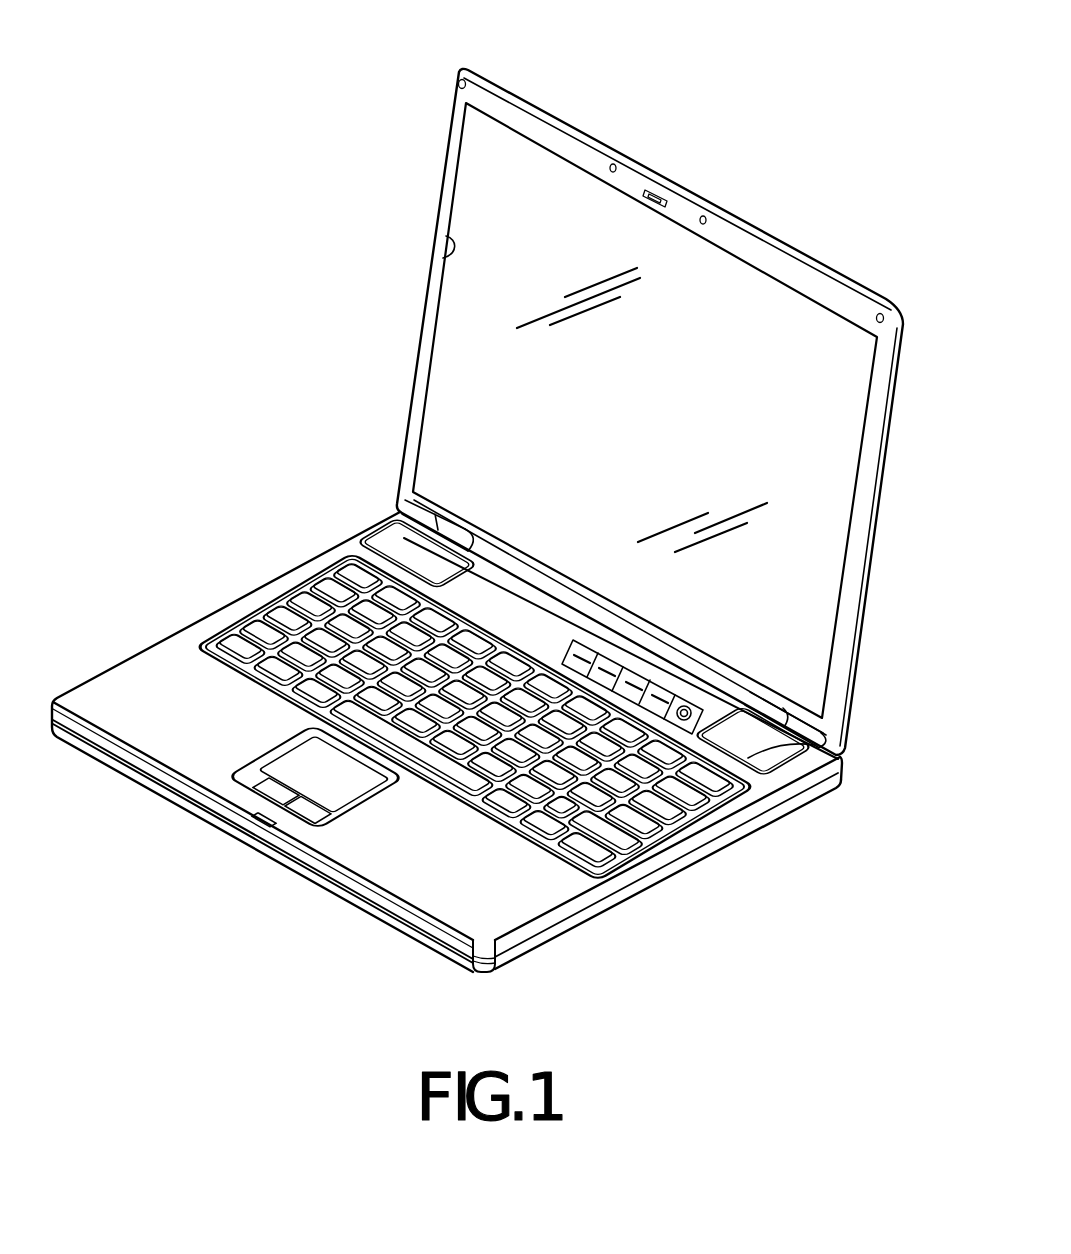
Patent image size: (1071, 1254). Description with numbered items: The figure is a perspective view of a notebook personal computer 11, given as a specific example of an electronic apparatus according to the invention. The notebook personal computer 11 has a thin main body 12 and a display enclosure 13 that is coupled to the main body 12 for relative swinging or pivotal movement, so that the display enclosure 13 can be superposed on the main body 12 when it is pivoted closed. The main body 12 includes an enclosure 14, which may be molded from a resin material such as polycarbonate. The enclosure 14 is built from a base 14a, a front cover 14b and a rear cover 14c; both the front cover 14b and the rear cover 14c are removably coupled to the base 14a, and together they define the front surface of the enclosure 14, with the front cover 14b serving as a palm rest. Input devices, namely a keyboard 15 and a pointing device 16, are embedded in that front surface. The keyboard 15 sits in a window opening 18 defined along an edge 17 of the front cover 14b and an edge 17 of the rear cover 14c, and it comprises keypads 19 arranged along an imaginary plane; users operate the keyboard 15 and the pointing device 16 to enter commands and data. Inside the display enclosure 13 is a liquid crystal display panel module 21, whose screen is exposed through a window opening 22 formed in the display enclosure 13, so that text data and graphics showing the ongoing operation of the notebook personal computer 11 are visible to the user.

The notebook personal computer 11 is at (283, 281).
The main body 12 is at (112, 652).
The display enclosure 13 is at (432, 182).
The enclosure 14 is at (653, 873).
The base 14a is at (760, 823).
The front cover 14b is at (770, 787).
The rear cover 14c is at (836, 757).
The keyboard 15 is at (277, 620).
The pointing device 16 is at (277, 753).
The edge 17 is at (217, 633).
The window opening 18 is at (197, 646).
The keypads 19 is at (353, 570).
The liquid crystal display (LCD) panel module 21 is at (431, 325).
The window opening 22 is at (438, 250).